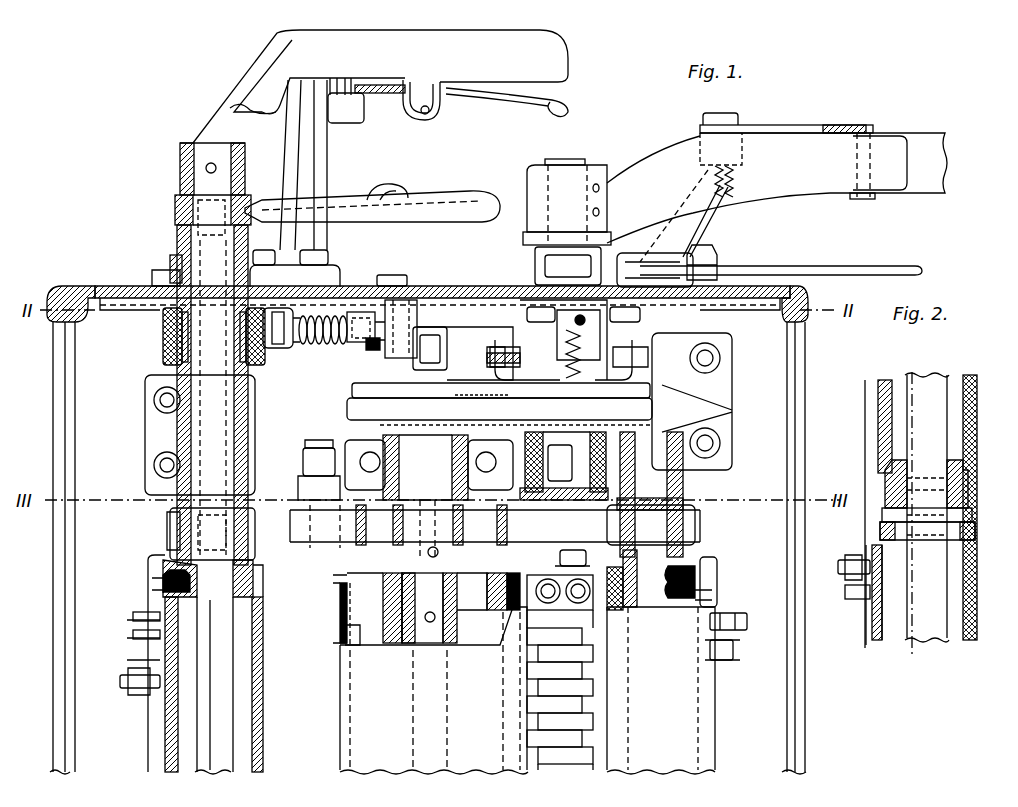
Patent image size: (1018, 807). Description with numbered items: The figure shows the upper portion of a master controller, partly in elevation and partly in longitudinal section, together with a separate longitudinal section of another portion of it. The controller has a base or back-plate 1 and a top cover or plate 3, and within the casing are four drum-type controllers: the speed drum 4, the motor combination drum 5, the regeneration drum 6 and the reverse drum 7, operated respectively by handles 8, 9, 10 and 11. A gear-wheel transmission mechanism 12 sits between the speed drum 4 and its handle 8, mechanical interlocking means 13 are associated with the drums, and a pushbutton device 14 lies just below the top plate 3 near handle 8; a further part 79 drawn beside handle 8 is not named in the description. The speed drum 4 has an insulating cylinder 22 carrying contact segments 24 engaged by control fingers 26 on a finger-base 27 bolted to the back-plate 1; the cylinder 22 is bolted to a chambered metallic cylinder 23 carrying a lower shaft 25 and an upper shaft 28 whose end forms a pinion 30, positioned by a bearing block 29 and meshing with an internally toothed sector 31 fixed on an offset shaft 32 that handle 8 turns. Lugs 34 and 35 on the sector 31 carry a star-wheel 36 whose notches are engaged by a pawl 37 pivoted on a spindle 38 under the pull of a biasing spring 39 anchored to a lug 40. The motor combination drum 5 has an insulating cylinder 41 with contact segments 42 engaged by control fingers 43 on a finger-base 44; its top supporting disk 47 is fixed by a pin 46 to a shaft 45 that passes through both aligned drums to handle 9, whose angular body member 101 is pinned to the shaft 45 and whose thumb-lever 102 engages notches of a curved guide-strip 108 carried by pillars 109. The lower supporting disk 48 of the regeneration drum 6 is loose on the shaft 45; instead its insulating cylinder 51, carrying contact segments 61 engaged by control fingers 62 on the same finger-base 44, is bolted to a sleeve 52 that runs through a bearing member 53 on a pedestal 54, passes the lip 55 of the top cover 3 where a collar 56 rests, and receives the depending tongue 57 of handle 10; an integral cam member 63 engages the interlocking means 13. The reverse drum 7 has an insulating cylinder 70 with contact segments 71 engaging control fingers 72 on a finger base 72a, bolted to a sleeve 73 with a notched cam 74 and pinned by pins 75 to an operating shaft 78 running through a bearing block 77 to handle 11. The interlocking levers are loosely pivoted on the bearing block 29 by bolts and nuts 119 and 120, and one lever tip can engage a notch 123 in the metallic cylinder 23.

In FIG. 1, the base or back-plate 1 is at (98, 375).
In FIG. 1, the top cover or plate 3 is at (115, 290).
In FIG. 1, the speed drum 4 is at (360, 700).
In FIG. 2, the motor combination drum 5 is at (848, 641).
In FIG. 1, the regeneration drum 6 is at (185, 722).
In FIG. 2, the regeneration drum 6 is at (853, 409).
In FIG. 1, the reverse drum 7 is at (690, 698).
In FIG. 1, the speed drum handle 8 is at (793, 147).
In FIG. 1, the motor combination drum handle 9 is at (277, 65).
In FIG. 1, the regeneration drum handle 10 is at (434, 198).
In FIG. 1, the reverse drum handle 11 is at (840, 270).
In FIG. 1, the gear-wheel transmission mechanism 12 is at (346, 389).
In FIG. 1, the mechanical interlocking means 13 is at (724, 514).
In FIG. 1, the pushbutton device 14 is at (482, 358).
In FIG. 1, the cylinder 22 is at (338, 626).
In FIG. 1, the chambered metallic cylinder or disk 23 is at (332, 592).
In FIG. 1, the contact segments or strips 24 is at (338, 646).
In FIG. 1, the shaft 25 is at (440, 608).
In FIG. 1, the control fingers 26 is at (537, 672).
In FIG. 1, the finger-base or block 27 is at (584, 630).
In FIG. 1, the shaft or stem 28 is at (440, 481).
In FIG. 1, the bearing block 29 is at (343, 452).
In FIG. 1, the pinion 30 is at (387, 386).
In FIG. 1, the annular sector or gear-wheel 31 is at (376, 396).
In FIG. 1, the offset shaft 32 is at (553, 167).
In FIG. 1, the lug 34 is at (437, 360).
In FIG. 1, the lug 35 is at (569, 354).
In FIG. 1, the star-wheel or notched strip 36 is at (477, 330).
In FIG. 1, the pawl 37 is at (355, 339).
In FIG. 1, the spindle 38 is at (398, 302).
In FIG. 1, the biasing spring 39 is at (315, 340).
In FIG. 1, the lug 40 is at (286, 348).
In FIG. 2, the cylinder 41 is at (880, 652).
In FIG. 2, the contact segments 42 is at (868, 641).
In FIG. 2, the control fingers 43 is at (866, 569).
In FIG. 1, the finger-base 44 is at (152, 714).
In FIG. 2, the finger-base 44 is at (876, 532).
In FIG. 2, the shaft 45 is at (918, 652).
In FIG. 2, the pin 46 is at (890, 514).
In FIG. 2, the top metallic supporting disk 47 is at (957, 512).
In FIG. 2, the lower supporting disk 48 is at (955, 497).
In FIG. 1, the insulating cylinder 51 is at (263, 702).
In FIG. 2, the insulating cylinder 51 is at (885, 385).
In FIG. 1, the sleeve 52 is at (178, 306).
In FIG. 1, the bearing member 53 is at (170, 340).
In FIG. 1, the block or pedestal 54 is at (148, 457).
In FIG. 1, the protruding rim or lip 55 is at (176, 277).
In FIG. 1, the collar or ring 56 is at (182, 258).
In FIG. 1, the depending tongue 57 is at (195, 217).
In FIG. 1, the contact segments 61 is at (163, 618).
In FIG. 1, the control fingers 62 is at (157, 678).
In FIG. 1, the cam member 63 is at (170, 533).
In FIG. 1, the insulating cylinder 70 is at (708, 592).
In FIG. 1, the contact segments 71 is at (716, 613).
In FIG. 1, the control fingers 72 is at (716, 638).
In FIG. 1, the finger base 72a is at (714, 572).
In FIG. 1, the sleeve 73 is at (684, 565).
In FIG. 1, the notched disk or cam 74 is at (697, 530).
In FIG. 1, the pins 75 is at (665, 578).
In FIG. 1, the bearing block 77 is at (712, 414).
In FIG. 1, the operating shaft 78 is at (670, 490).
In FIG. 1, the lever arm 79 is at (646, 163).
In FIG. 1, the angular body member 101 is at (228, 108).
In FIG. 1, the thumb-lever 102 is at (540, 109).
In FIG. 1, the curved guide-strip 108 is at (404, 102).
In FIG. 1, the standards or pillars 109 is at (321, 152).
In FIG. 1, the bolt and nut 119 is at (306, 450).
In FIG. 1, the bolt and nut 120 is at (603, 565).
In FIG. 1, the notch 123 is at (488, 591).